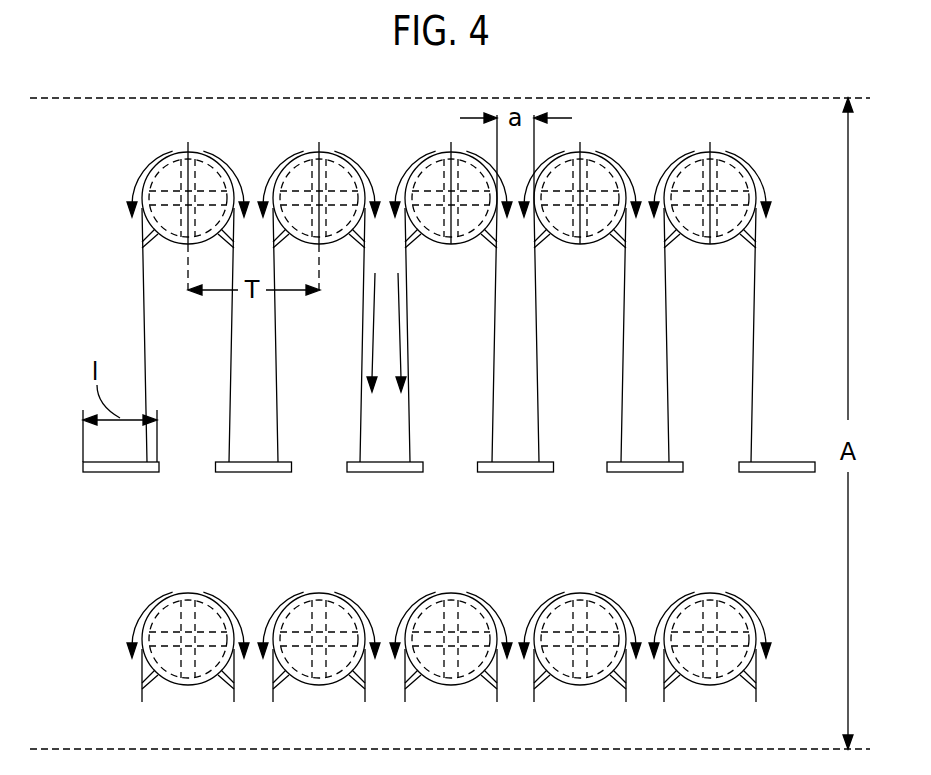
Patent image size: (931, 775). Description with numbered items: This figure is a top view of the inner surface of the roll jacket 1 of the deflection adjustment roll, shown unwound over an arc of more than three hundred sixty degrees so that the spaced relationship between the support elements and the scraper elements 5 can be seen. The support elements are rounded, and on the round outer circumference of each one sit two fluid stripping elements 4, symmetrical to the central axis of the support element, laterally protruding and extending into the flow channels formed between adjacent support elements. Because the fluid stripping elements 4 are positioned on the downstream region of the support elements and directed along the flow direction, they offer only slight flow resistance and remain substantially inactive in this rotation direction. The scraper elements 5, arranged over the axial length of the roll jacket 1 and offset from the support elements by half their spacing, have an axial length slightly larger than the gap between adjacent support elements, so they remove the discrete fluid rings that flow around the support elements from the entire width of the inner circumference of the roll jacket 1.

The roll jacket 1 is at (457, 361).
The fluid stripping element 4 is at (755, 243).
The scraper element 5 is at (218, 473).